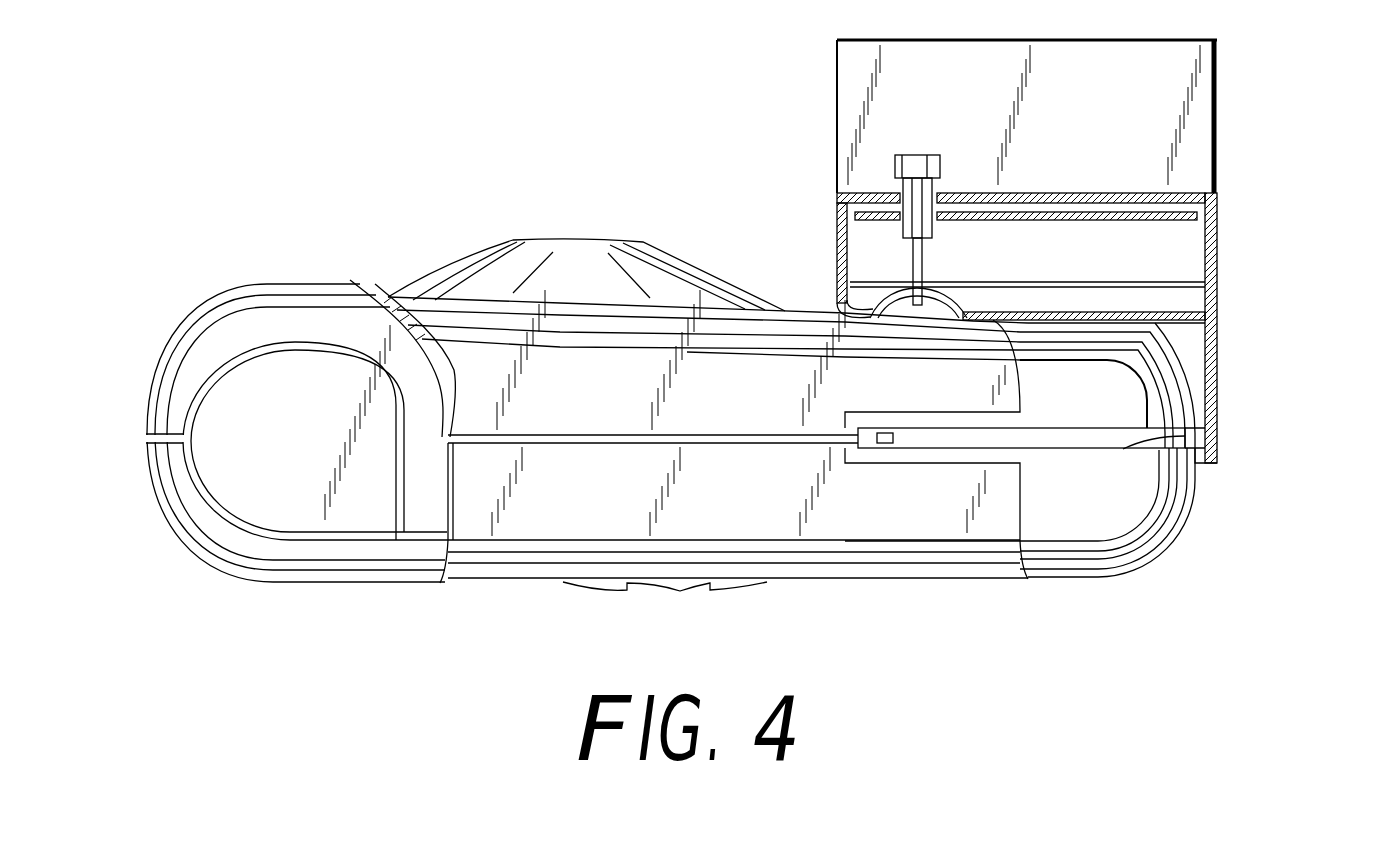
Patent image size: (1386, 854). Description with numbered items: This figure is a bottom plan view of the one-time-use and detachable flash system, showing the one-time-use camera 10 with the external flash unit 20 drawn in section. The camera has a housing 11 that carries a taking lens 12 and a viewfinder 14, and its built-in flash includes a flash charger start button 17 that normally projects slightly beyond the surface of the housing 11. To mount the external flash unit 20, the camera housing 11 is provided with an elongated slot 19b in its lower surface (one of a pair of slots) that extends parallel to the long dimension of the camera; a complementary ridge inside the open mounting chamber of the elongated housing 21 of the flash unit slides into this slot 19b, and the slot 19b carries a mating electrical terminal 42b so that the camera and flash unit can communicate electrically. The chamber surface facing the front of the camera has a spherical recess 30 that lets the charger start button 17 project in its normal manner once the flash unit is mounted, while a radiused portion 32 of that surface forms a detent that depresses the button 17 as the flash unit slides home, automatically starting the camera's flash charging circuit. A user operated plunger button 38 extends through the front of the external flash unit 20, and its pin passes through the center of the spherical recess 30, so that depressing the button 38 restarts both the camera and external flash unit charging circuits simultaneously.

The one-time-use camera 10 is at (186, 252).
The housing 11 is at (1160, 540).
The taking lens 12 is at (585, 242).
The viewfinder 14 is at (677, 590).
The flash charger start button 17 is at (960, 312).
The elongated slot 19b is at (1130, 440).
The external flash unit 20 is at (1230, 85).
The elongated housing 21 is at (1218, 242).
The spherical recess 30 is at (940, 300).
The radiused portion 32 is at (827, 308).
The plunger button 38 is at (908, 155).
The electrical terminal 42b is at (893, 445).